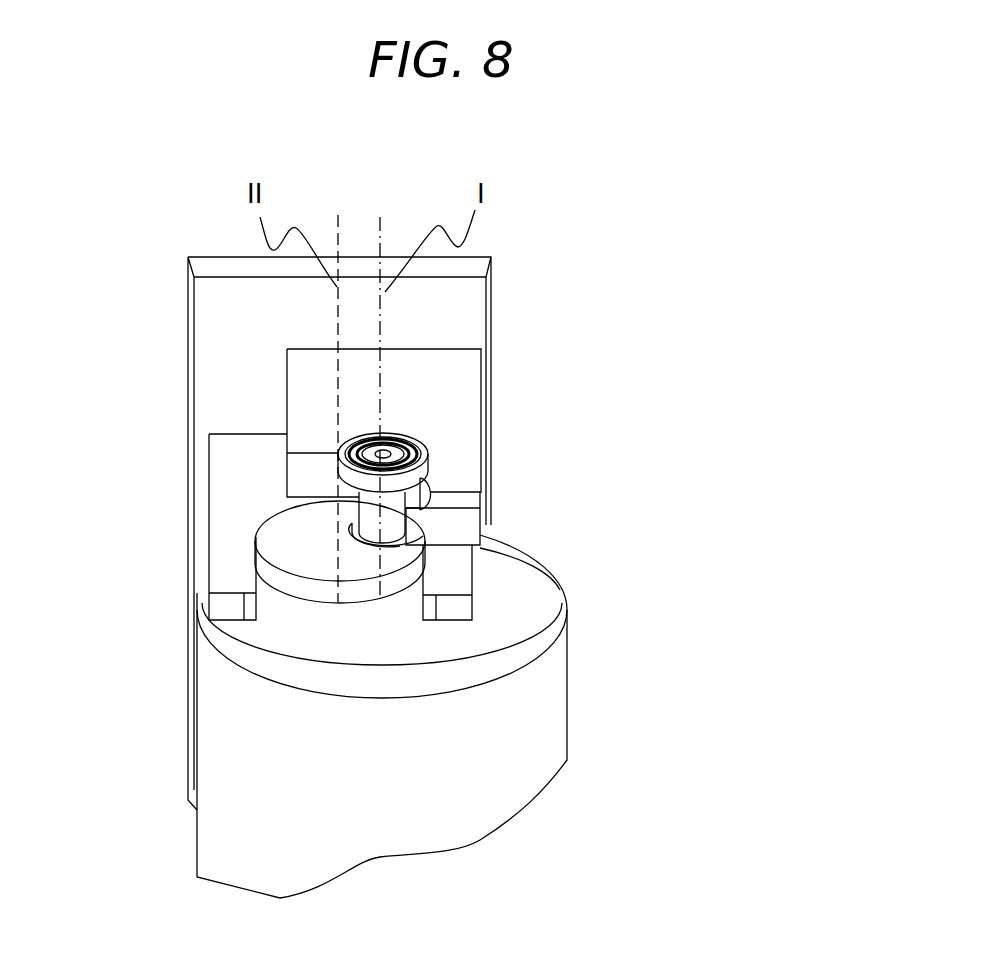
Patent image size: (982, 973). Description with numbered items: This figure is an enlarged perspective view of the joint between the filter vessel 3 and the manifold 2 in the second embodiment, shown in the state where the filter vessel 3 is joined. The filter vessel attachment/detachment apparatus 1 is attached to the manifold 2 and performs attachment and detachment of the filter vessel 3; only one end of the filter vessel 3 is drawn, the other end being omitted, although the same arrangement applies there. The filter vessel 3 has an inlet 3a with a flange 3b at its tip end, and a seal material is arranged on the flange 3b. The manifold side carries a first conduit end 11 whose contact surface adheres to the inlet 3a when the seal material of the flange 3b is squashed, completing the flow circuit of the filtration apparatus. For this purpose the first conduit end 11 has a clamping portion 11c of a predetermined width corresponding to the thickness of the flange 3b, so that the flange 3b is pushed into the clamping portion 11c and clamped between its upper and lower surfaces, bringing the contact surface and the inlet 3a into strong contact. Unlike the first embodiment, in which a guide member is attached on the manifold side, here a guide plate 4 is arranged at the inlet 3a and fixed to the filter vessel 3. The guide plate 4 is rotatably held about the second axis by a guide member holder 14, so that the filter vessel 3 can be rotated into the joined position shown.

The filter vessel attachment/detachment apparatus 1 is at (638, 342).
The manifold 2 is at (477, 292).
The filter vessel 3 is at (520, 570).
The inlet 3a is at (368, 513).
The flange 3b is at (360, 435).
The guide plate 4 is at (332, 570).
The first conduit end 11 is at (493, 358).
The clamping portion 11c is at (430, 513).
The guide member holder 14 is at (452, 570).